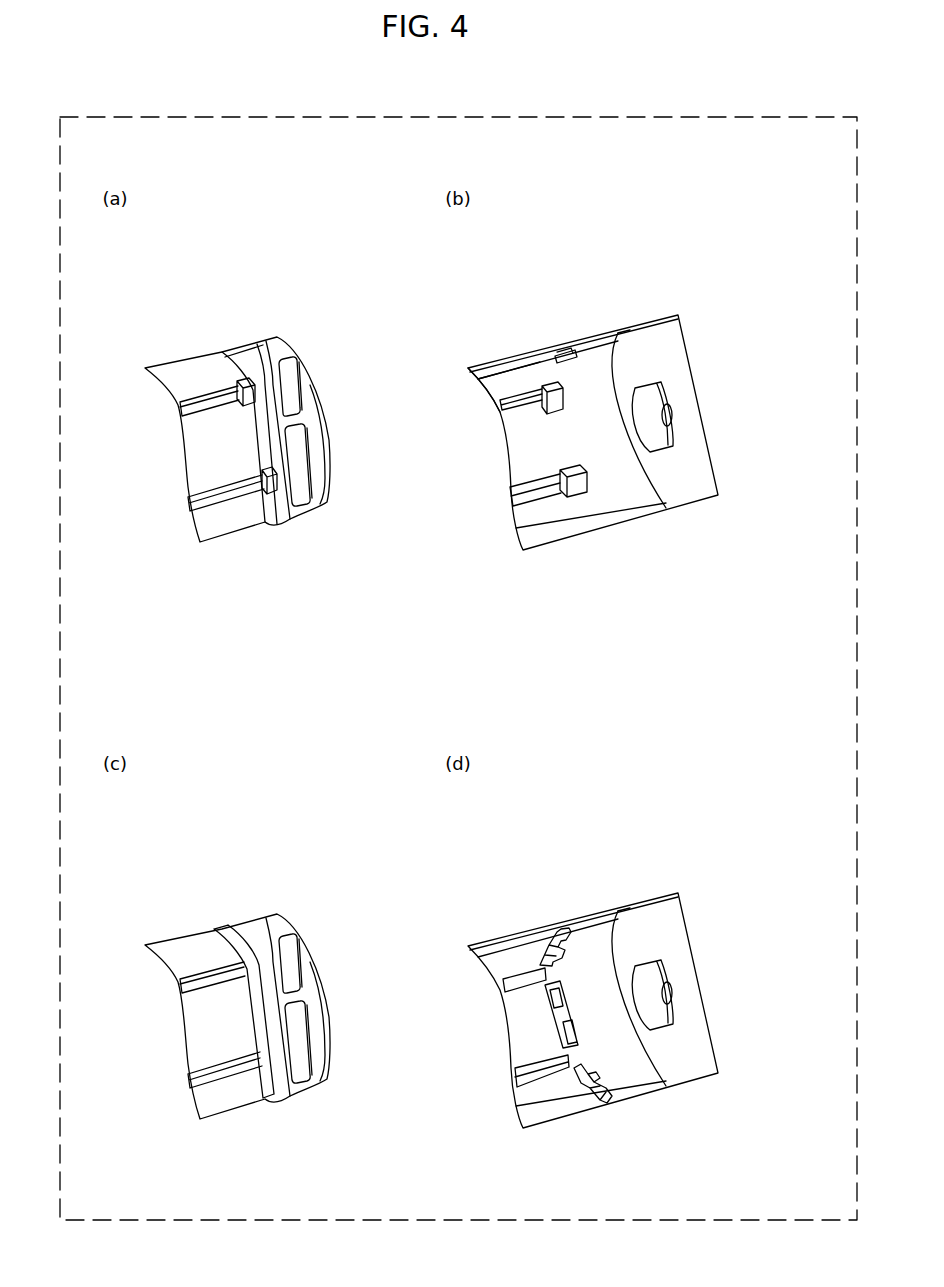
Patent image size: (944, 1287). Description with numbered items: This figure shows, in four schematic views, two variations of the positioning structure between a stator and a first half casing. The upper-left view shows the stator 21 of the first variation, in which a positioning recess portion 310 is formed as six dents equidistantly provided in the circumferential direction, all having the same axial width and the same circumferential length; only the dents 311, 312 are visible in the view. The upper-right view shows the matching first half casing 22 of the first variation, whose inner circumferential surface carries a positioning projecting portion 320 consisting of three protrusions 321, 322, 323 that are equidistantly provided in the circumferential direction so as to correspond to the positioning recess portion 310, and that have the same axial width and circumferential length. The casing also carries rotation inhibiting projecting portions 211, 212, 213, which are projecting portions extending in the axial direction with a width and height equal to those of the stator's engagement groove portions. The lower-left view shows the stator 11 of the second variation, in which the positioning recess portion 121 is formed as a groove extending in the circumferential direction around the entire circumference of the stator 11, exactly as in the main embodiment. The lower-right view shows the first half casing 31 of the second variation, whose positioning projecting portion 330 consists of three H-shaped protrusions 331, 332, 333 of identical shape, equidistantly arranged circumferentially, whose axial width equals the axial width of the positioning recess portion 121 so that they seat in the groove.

The stator 11 is at (203, 913).
The positioning recess portion 121 is at (234, 938).
The stator 21 is at (203, 336).
The rotation inhibiting projecting portion 211 is at (546, 492).
The rotation inhibiting projecting portion 212 is at (492, 364).
The rotation inhibiting projecting portion 213 is at (518, 402).
The first half casing 22 is at (548, 328).
The first half casing 31 is at (551, 906).
The positioning recess portion 310 is at (387, 334).
The dent 311 is at (255, 390).
The dent 312 is at (278, 478).
The positioning projecting portion 320 is at (760, 257).
The protrusion 321 is at (570, 342).
The protrusion 322 is at (553, 394).
The protrusion 323 is at (575, 482).
The positioning projecting portion 330 is at (762, 910).
The protrusion 331 is at (568, 941).
The protrusion 332 is at (574, 1028).
The protrusion 333 is at (606, 1080).